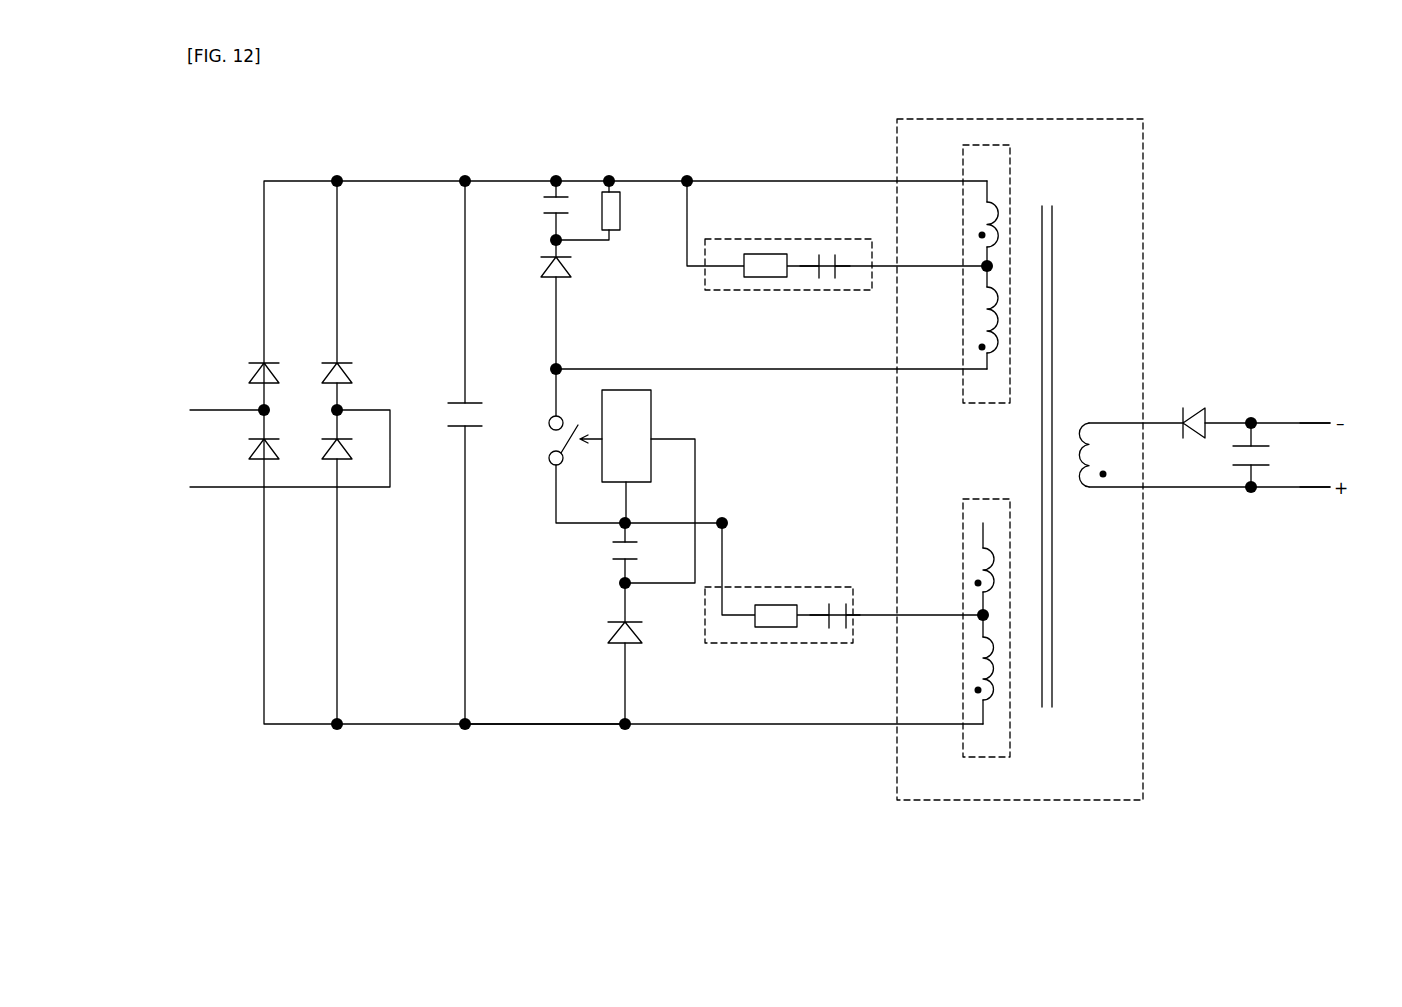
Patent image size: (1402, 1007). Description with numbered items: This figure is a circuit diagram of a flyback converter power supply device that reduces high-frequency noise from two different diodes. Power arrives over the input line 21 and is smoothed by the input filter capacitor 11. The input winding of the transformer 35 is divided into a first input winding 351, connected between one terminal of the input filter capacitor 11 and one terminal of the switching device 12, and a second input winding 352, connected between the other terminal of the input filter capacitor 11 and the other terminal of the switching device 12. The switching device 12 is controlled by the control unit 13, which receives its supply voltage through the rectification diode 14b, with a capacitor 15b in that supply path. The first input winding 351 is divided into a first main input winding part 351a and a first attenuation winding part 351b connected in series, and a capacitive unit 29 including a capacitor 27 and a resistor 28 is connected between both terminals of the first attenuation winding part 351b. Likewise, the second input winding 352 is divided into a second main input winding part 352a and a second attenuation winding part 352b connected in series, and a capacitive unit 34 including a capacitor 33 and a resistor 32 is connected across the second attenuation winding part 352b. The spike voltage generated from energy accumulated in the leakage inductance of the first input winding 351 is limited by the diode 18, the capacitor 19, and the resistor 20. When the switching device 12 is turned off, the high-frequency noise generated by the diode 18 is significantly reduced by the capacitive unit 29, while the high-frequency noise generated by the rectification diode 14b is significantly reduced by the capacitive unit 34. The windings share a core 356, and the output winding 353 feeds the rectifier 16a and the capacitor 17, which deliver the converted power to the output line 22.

The input filter capacitor 11 is at (452, 428).
The switching device 12 is at (540, 432).
The control unit 13 is at (655, 403).
The rectification diode 14b is at (610, 655).
The capacitor 15b is at (610, 552).
The rectifier 16a is at (1200, 400).
The capacitor 17 is at (1272, 456).
The diode 18 is at (532, 275).
The capacitor 19 is at (540, 207).
The resistor 20 is at (612, 180).
The input line 21 is at (548, 737).
The output line 22 is at (1325, 498).
The capacitor 27 is at (829, 283).
The resistor 28 is at (758, 283).
The capacitive unit 29 is at (795, 230).
The resistor 32 is at (775, 598).
The capacitor 33 is at (840, 600).
The capacitive unit 34 is at (757, 650).
The transformer 35 is at (880, 133).
The first input winding 351 is at (958, 410).
The first main input winding part 351a is at (975, 326).
The first attenuation winding part 351b is at (975, 222).
The second input winding 352 is at (960, 745).
The second main input winding part 352a is at (978, 662).
The second attenuation winding part 352b is at (978, 568).
The output winding 353 is at (1096, 487).
The core 356 is at (1053, 712).